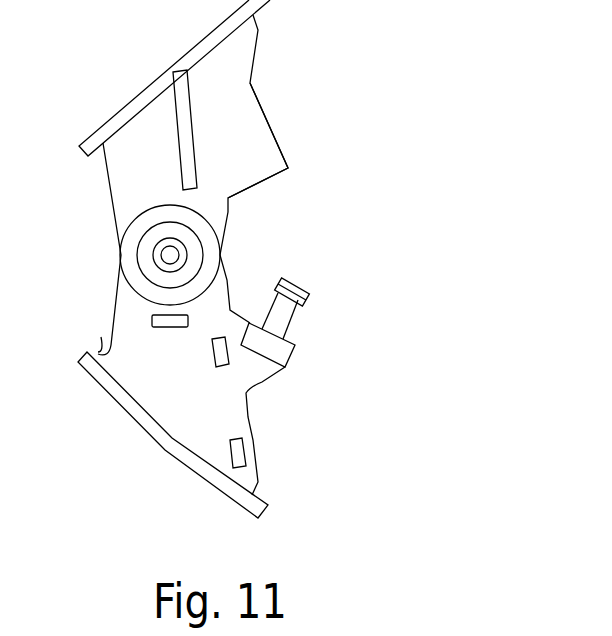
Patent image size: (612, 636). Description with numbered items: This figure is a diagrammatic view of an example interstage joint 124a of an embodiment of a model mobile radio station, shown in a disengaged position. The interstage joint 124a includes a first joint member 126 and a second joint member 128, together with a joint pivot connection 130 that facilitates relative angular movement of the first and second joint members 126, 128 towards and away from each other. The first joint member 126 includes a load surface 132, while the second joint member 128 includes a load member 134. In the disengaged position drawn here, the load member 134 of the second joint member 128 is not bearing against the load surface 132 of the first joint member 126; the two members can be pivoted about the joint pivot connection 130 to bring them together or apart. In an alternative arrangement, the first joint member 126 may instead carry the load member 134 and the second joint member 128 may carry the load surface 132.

The interstage joint 124a is at (402, 128).
The first joint member 126 is at (243, 98).
The second joint member 128 is at (238, 427).
The joint pivot connection 130 is at (168, 256).
The load surface 132 is at (276, 177).
The load member 134 is at (287, 290).